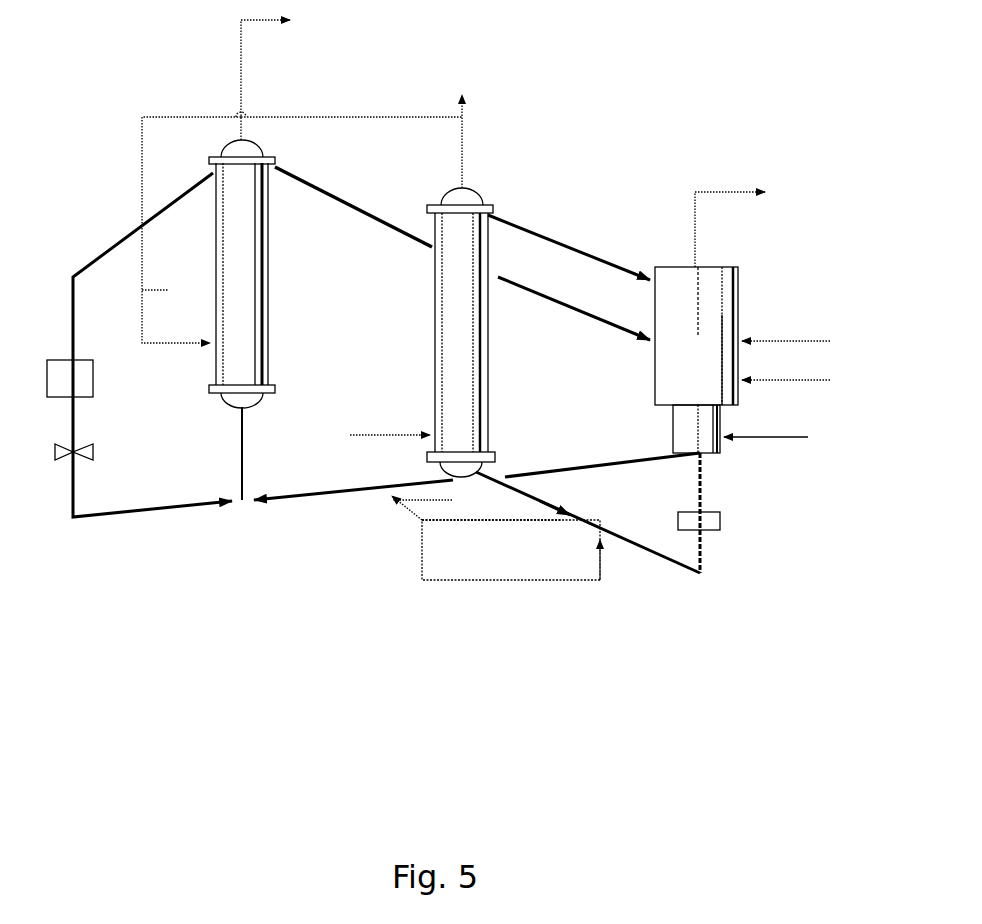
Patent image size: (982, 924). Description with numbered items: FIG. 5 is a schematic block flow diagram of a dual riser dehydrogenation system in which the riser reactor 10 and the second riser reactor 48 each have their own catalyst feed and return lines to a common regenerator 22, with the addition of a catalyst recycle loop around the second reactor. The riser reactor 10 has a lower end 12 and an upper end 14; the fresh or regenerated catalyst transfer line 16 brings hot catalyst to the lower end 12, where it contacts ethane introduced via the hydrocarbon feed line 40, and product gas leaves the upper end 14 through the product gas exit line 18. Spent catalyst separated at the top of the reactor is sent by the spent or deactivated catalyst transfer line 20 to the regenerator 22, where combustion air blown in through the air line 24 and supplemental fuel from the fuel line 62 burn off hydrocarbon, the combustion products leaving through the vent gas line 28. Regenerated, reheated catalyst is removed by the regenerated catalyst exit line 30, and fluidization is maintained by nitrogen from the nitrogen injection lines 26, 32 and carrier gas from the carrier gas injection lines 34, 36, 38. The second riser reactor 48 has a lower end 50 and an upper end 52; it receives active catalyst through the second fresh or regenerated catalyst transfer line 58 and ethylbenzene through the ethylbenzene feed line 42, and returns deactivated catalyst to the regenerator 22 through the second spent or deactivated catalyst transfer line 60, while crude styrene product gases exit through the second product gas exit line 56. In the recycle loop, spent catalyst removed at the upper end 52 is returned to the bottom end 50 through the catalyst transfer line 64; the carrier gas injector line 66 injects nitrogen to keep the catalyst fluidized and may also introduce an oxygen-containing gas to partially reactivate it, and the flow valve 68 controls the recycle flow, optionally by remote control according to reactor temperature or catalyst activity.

The riser reactor 10 is at (468, 359).
The lower end 12 is at (476, 473).
The upper end 14 is at (466, 190).
The fresh or regenerated catalyst transfer line 16 is at (598, 528).
The product gas exit line 18 is at (465, 133).
The spent or deactivated catalyst transfer line 20 is at (535, 236).
The regenerator 22 is at (702, 383).
The air line 24 is at (770, 381).
The nitrogen injection line 26 is at (750, 438).
The vent gas line 28 is at (693, 222).
The regenerated catalyst exit line 30 is at (697, 483).
The nitrogen injection line 32 is at (713, 530).
The carrier gas injection line 34 is at (490, 580).
The carrier gas injection line 36 is at (470, 523).
The carrier gas injection line 38 is at (438, 508).
The hydrocarbon feed line 40 is at (428, 438).
The ethylbenzene feed line 42 is at (302, 227).
The second riser reactor 48 is at (250, 271).
The lower end 50 is at (240, 408).
The upper end 52 is at (238, 142).
The second product gas exit line 56 is at (240, 70).
The second fresh or regenerated catalyst transfer line 58 is at (558, 465).
The second spent or deactivated catalyst transfer line 60 is at (340, 205).
The fuel line 62 is at (775, 340).
The catalyst transfer line 64 is at (100, 258).
The carrier gas injector line 66 is at (95, 380).
The flow valve 68 is at (97, 452).